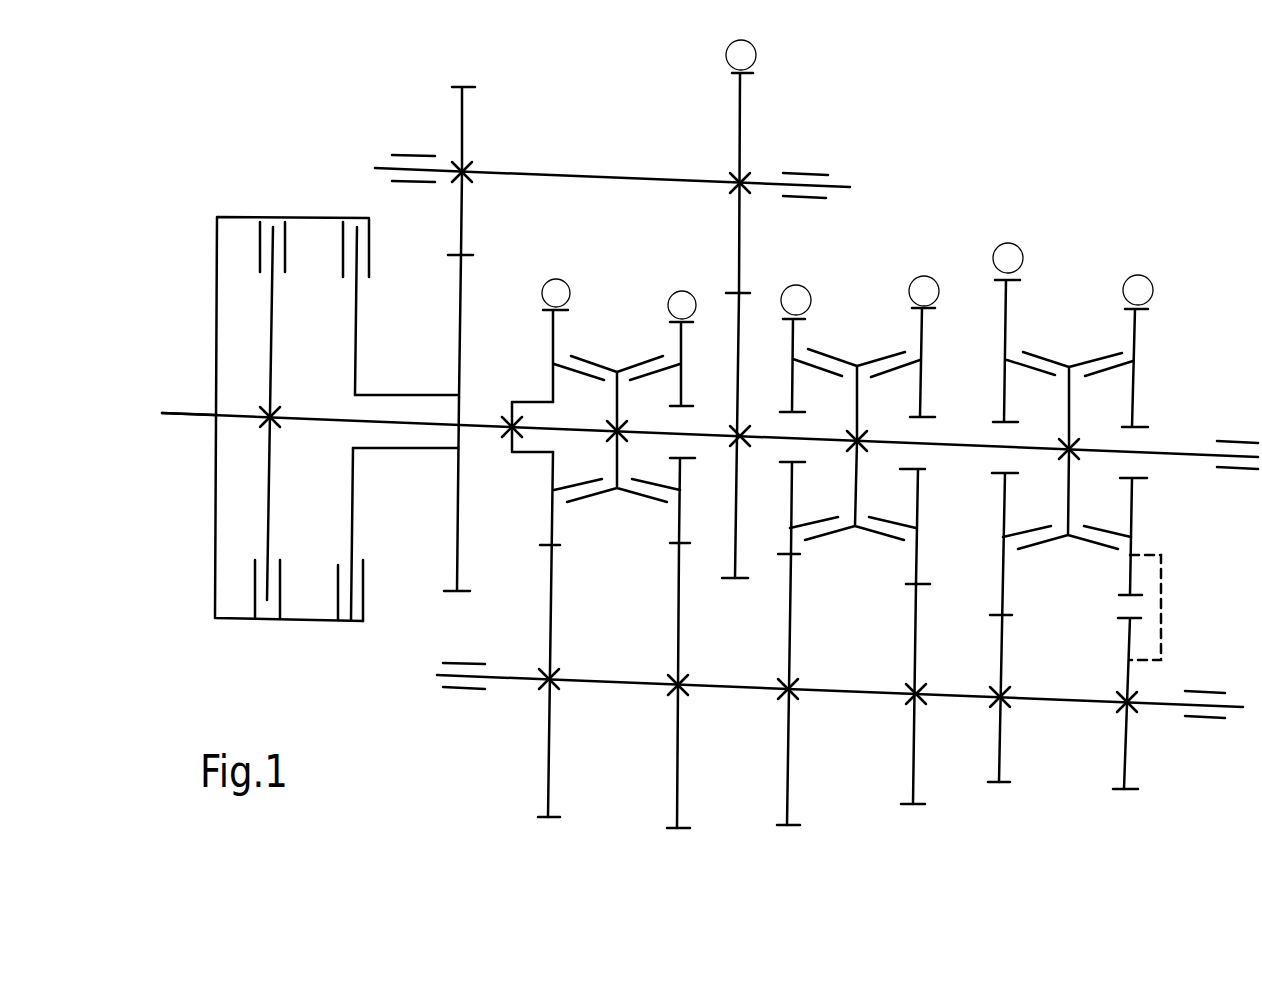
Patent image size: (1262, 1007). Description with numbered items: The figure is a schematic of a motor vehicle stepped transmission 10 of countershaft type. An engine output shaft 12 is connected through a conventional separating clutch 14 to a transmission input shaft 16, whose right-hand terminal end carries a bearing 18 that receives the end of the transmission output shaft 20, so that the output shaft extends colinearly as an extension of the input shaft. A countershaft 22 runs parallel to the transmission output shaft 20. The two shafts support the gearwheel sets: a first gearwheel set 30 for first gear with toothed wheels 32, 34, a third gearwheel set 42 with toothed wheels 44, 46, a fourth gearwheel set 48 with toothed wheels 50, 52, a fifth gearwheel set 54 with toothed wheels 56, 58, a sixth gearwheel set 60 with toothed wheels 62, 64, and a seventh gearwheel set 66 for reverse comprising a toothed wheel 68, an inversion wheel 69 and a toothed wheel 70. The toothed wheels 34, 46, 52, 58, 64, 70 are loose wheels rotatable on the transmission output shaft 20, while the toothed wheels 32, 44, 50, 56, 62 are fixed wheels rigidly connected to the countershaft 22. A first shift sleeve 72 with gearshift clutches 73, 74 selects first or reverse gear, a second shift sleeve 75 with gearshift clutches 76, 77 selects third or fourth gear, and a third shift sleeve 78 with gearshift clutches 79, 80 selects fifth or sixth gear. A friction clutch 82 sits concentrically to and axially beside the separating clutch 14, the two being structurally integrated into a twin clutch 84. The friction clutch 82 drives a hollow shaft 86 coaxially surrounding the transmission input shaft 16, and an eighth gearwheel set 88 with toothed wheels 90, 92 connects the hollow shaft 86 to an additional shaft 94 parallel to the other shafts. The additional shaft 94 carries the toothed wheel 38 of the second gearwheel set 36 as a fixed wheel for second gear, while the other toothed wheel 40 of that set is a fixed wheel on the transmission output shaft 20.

The motor vehicle stepped transmission 10 is at (989, 189).
The engine output shaft 12 is at (188, 412).
The separating clutch 14 is at (268, 494).
The transmission input shaft 16 is at (390, 418).
The bearing 18 is at (533, 412).
The transmission output shaft 20 is at (577, 427).
The countershaft 22 is at (502, 678).
The first gearwheel set 30 is at (999, 796).
The toothed wheel 32 is at (1001, 655).
The toothed wheel 34 is at (1001, 509).
The second gearwheel set 36 is at (735, 587).
The toothed wheel 38 is at (742, 126).
The toothed wheel 40 is at (738, 385).
The third gearwheel set 42 is at (912, 816).
The toothed wheel 44 is at (917, 633).
The toothed wheel 46 is at (917, 558).
The fourth gearwheel set 48 is at (788, 836).
The toothed wheel 50 is at (790, 622).
The toothed wheel 52 is at (789, 488).
The fifth gearwheel set 54 is at (548, 828).
The toothed wheel 56 is at (550, 742).
The toothed wheel 58 is at (553, 522).
The sixth gearwheel set 60 is at (678, 838).
The toothed wheel 62 is at (678, 746).
The toothed wheel 64 is at (679, 522).
The seventh gearwheel set 66 is at (1124, 803).
The toothed wheel 68 is at (1127, 644).
The inversion wheel 69 is at (1160, 608).
The toothed wheel 70 is at (1132, 511).
The first shift sleeve 72 is at (1069, 420).
The gearshift clutch 73 is at (1034, 366).
The gearshift clutch 74 is at (1105, 368).
The second shift sleeve 75 is at (855, 417).
The gearshift clutch 76 is at (888, 362).
The gearshift clutch 77 is at (822, 360).
The third shift sleeve 78 is at (618, 400).
The gearshift clutch 79 is at (584, 361).
The gearshift clutch 80 is at (655, 360).
The friction clutch 82 is at (353, 517).
The twin clutch 84 is at (204, 244).
The hollow shaft 86 is at (458, 398).
The eighth gearwheel set 88 is at (462, 82).
The toothed wheel 90 is at (460, 297).
The toothed wheel 92 is at (460, 214).
The additional shaft 94 is at (616, 177).